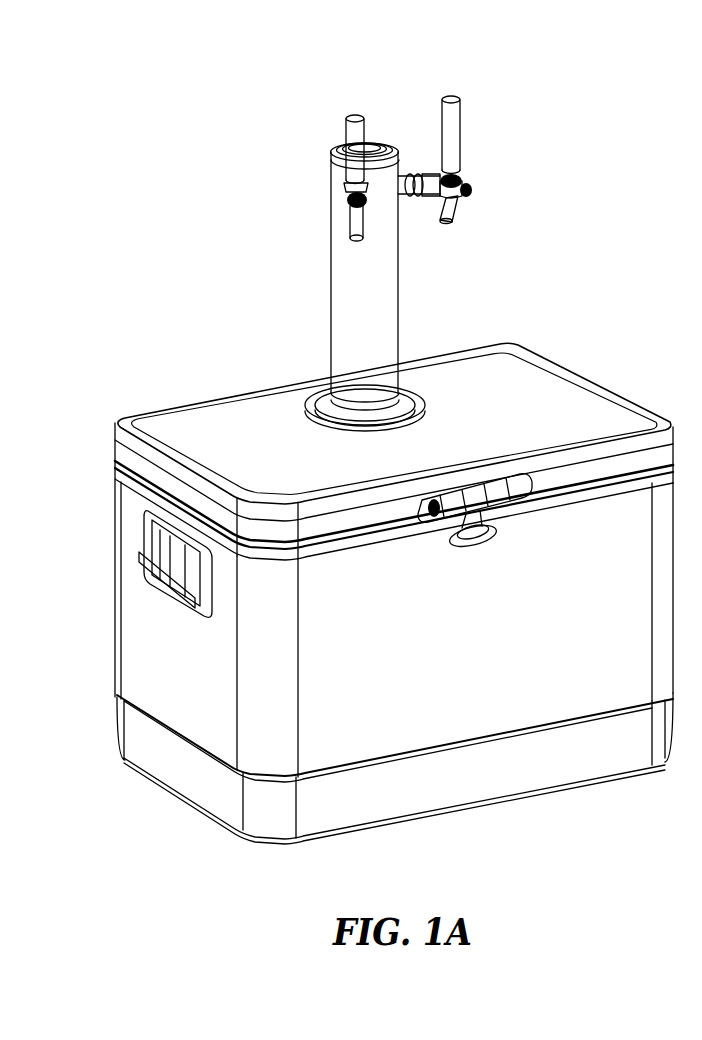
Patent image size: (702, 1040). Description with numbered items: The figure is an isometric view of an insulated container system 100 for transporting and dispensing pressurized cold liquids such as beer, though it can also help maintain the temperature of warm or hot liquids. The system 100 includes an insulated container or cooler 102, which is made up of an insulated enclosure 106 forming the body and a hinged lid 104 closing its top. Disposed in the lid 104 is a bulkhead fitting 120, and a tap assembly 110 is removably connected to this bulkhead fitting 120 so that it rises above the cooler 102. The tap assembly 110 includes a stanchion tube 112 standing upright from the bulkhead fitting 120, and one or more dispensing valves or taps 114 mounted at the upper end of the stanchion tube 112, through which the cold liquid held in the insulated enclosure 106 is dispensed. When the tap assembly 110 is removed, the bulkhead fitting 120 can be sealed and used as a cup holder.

The insulated container system 100 is at (272, 166).
The insulated container 102 is at (497, 322).
The hinged lid 104 is at (542, 383).
The insulated enclosure 106 is at (577, 753).
The tap assembly 110 is at (312, 296).
The stanchion tube 112 is at (352, 323).
The dispensing valves or taps 114 is at (360, 128).
The bulkhead fitting 120 is at (306, 403).